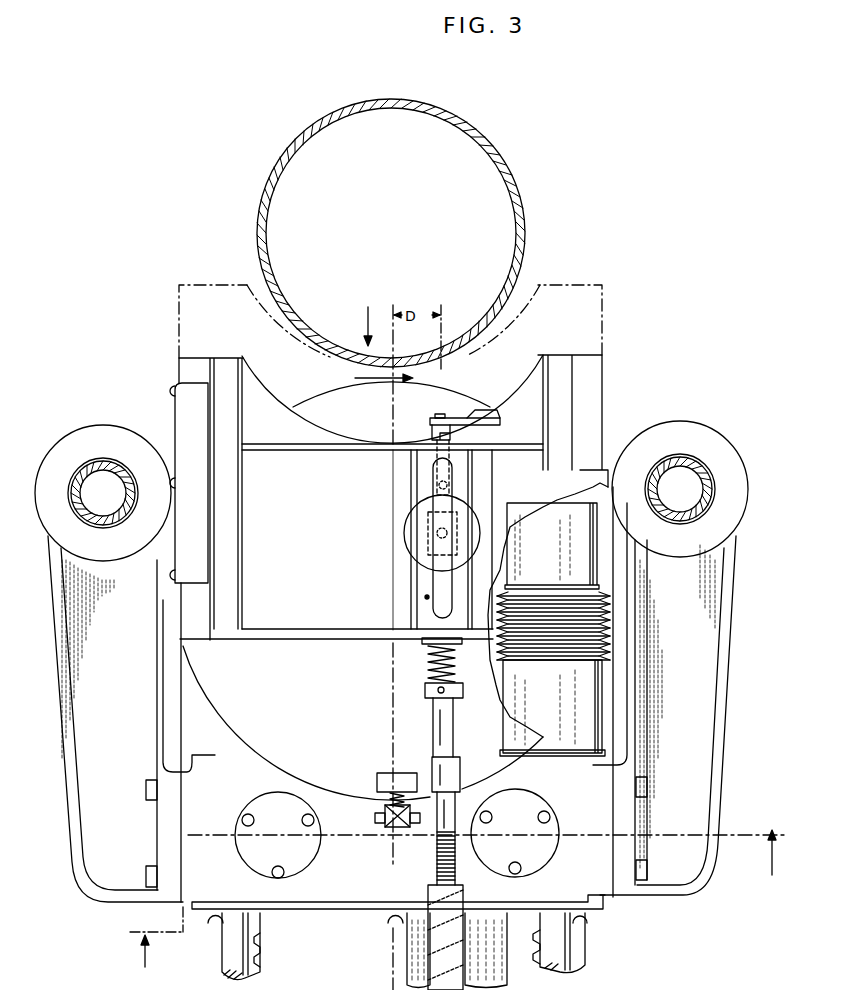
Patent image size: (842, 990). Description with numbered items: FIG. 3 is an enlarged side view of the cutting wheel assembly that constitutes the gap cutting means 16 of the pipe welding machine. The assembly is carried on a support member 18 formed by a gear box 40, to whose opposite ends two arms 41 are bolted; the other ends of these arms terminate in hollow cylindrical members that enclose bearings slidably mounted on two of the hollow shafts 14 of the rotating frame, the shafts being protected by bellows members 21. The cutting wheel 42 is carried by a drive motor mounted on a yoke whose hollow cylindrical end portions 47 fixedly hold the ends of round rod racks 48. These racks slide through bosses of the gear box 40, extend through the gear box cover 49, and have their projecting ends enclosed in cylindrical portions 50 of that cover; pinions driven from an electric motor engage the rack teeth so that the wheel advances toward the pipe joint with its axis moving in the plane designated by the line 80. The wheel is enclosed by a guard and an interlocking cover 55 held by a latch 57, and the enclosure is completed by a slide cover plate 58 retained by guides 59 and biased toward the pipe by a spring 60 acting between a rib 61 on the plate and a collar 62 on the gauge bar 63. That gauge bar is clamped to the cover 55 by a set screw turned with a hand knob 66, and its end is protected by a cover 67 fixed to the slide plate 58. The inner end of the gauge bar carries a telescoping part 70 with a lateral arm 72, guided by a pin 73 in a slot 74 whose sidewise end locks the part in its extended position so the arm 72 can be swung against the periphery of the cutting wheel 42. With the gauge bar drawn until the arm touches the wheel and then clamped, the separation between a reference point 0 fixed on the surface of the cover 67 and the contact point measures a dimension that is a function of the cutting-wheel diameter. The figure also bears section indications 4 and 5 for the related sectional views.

The hollow shafts 14 is at (95, 475).
The bellows members 21 is at (68, 462).
The support member 18 is at (746, 583).
The arms 41 is at (80, 685).
The hollow cylindrical end portions 47 is at (592, 538).
The slide cover plate 58 is at (179, 322).
The guides 59 is at (178, 415).
The cutting wheel 42 is at (450, 392).
The part 70 is at (447, 412).
The arm or stud 72 is at (500, 416).
The slot 74 is at (437, 457).
The cover 67 is at (411, 472).
The pin 73 is at (440, 486).
The hand knob 66 is at (405, 537).
The point O 0 is at (425, 596).
The plane line 80 is at (433, 592).
The rib 61 is at (356, 636).
The spring 60 is at (428, 660).
The collar 62 is at (430, 698).
The gauge bar 63 is at (456, 728).
The interlocking cover 55 is at (287, 773).
The latch 57 is at (400, 827).
The cylindrical portions 50 is at (213, 925).
The gear box 40 is at (335, 883).
The round rod racks 48 is at (258, 965).
The gear box cover 49 is at (376, 912).
The gap cutting means 16 is at (101, 958).
The section line 4 is at (490, 852).
The direction arrow 5 is at (375, 378).